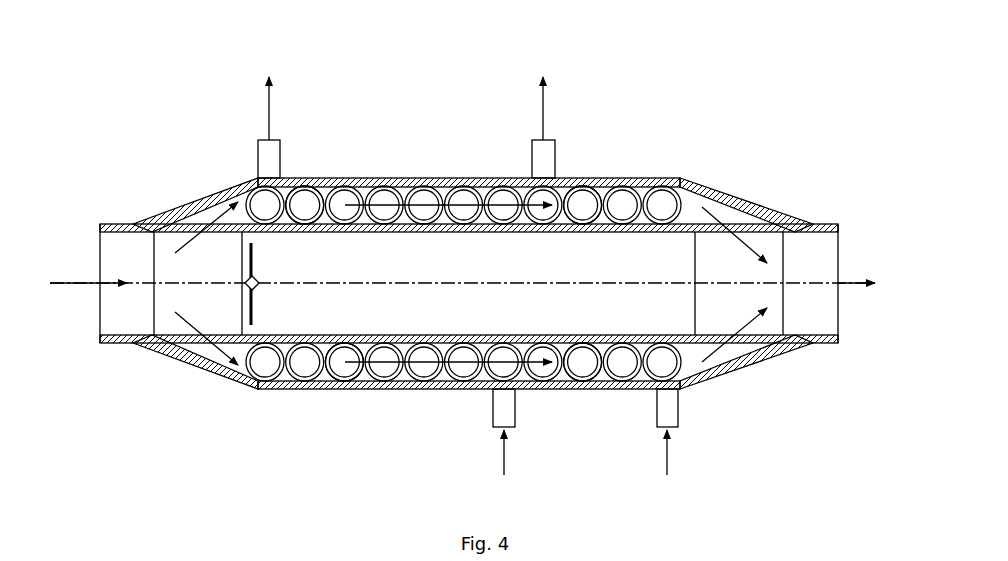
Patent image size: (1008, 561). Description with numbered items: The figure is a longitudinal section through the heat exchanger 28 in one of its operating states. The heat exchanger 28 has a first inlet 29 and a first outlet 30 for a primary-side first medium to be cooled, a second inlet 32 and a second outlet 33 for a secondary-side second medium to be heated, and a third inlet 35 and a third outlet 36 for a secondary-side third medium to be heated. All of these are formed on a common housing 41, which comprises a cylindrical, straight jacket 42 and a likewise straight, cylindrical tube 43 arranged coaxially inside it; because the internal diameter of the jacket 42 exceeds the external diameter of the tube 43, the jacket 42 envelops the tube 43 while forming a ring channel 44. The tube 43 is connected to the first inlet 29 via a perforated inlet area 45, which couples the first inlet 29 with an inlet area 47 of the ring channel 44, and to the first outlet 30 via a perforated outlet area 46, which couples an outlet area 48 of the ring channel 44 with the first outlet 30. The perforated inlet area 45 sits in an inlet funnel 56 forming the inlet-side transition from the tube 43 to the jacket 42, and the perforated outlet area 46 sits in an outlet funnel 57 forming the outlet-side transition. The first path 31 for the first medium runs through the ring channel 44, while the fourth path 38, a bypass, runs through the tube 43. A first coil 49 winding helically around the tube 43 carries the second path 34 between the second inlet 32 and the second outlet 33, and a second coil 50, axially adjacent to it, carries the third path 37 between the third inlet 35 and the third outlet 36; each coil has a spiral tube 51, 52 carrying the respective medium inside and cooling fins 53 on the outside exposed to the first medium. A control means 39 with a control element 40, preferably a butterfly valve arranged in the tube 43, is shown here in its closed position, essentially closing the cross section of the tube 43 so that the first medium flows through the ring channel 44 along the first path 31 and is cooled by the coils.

The heat exchanger 28 is at (795, 120).
The first inlet 29 is at (100, 318).
The first outlet 30 is at (840, 325).
The first path 31 is at (425, 224).
The second inlet 32 is at (510, 413).
The second outlet 33 is at (262, 152).
The second path 34 is at (305, 205).
The third inlet 35 is at (680, 410).
The third outlet 36 is at (538, 152).
The third path 37 is at (583, 205).
The fourth path 38 is at (493, 270).
The control means 39 is at (262, 256).
The control element 40 is at (248, 268).
The housing 41 is at (410, 187).
The jacket 42 is at (383, 182).
The tube 43 is at (820, 223).
The ring channel 44 is at (443, 185).
The perforated inlet area 45 is at (177, 200).
The perforated outlet area 46 is at (750, 228).
The inlet area 47 is at (210, 356).
The outlet area 48 is at (725, 352).
The first coil 49 is at (345, 187).
The second coil 50 is at (640, 182).
The spiral tube 51 is at (257, 390).
The spiral tube 52 is at (647, 387).
The cooling fins 53 is at (282, 388).
The inlet funnel 56 is at (228, 185).
The outlet funnel 57 is at (725, 196).